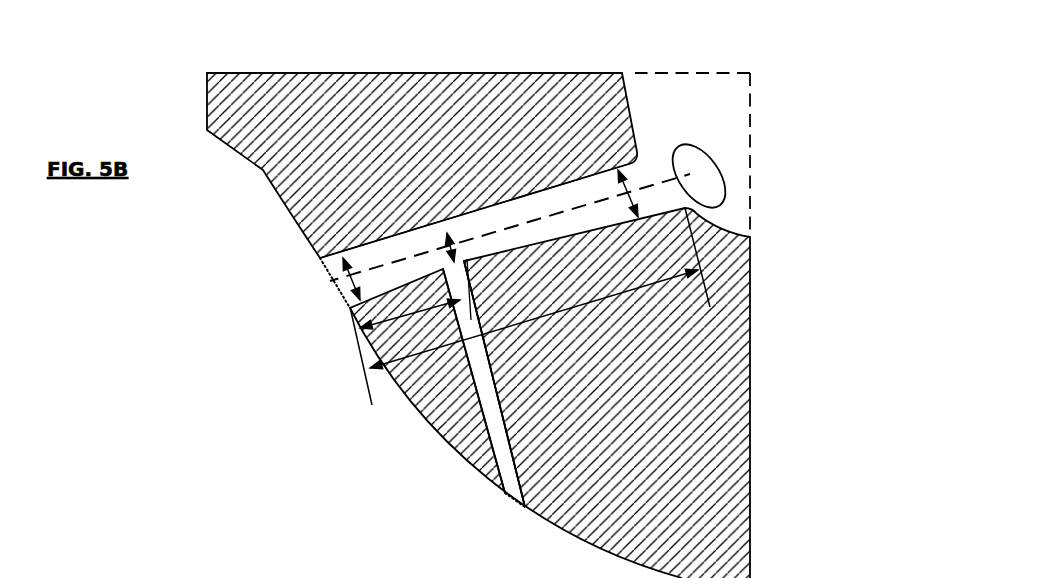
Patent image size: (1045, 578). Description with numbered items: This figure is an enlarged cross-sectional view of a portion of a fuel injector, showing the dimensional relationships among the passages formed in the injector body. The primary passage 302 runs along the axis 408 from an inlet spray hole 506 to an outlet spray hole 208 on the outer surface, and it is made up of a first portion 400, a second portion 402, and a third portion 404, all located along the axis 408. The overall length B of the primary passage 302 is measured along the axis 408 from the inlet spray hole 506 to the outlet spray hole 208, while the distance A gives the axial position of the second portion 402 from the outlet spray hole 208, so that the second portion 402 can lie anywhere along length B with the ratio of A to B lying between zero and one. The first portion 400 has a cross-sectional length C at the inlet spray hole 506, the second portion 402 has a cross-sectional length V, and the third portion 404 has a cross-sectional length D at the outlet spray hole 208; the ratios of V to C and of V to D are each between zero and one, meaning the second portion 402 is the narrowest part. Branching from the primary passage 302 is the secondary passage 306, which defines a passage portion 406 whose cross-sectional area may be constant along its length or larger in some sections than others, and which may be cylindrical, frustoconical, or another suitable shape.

The outlet spray hole 208 is at (300, 267).
The primary passage 302 is at (510, 183).
The secondary passage 306 is at (500, 387).
The first portion 400 is at (583, 188).
The second portion 402 is at (445, 202).
The third portion 404 is at (364, 248).
The passage portion 406 is at (490, 450).
The axis 408 is at (698, 172).
The inlet spray hole 506 is at (655, 168).
The cross-sectional length of the second portion V is at (447, 234).
The distance of the second portion from the outlet spray hole A is at (410, 316).
The length of the primary passage B is at (602, 298).
The cross-sectional length of the first portion C is at (620, 190).
The cross-sectional length of the third portion D is at (345, 280).